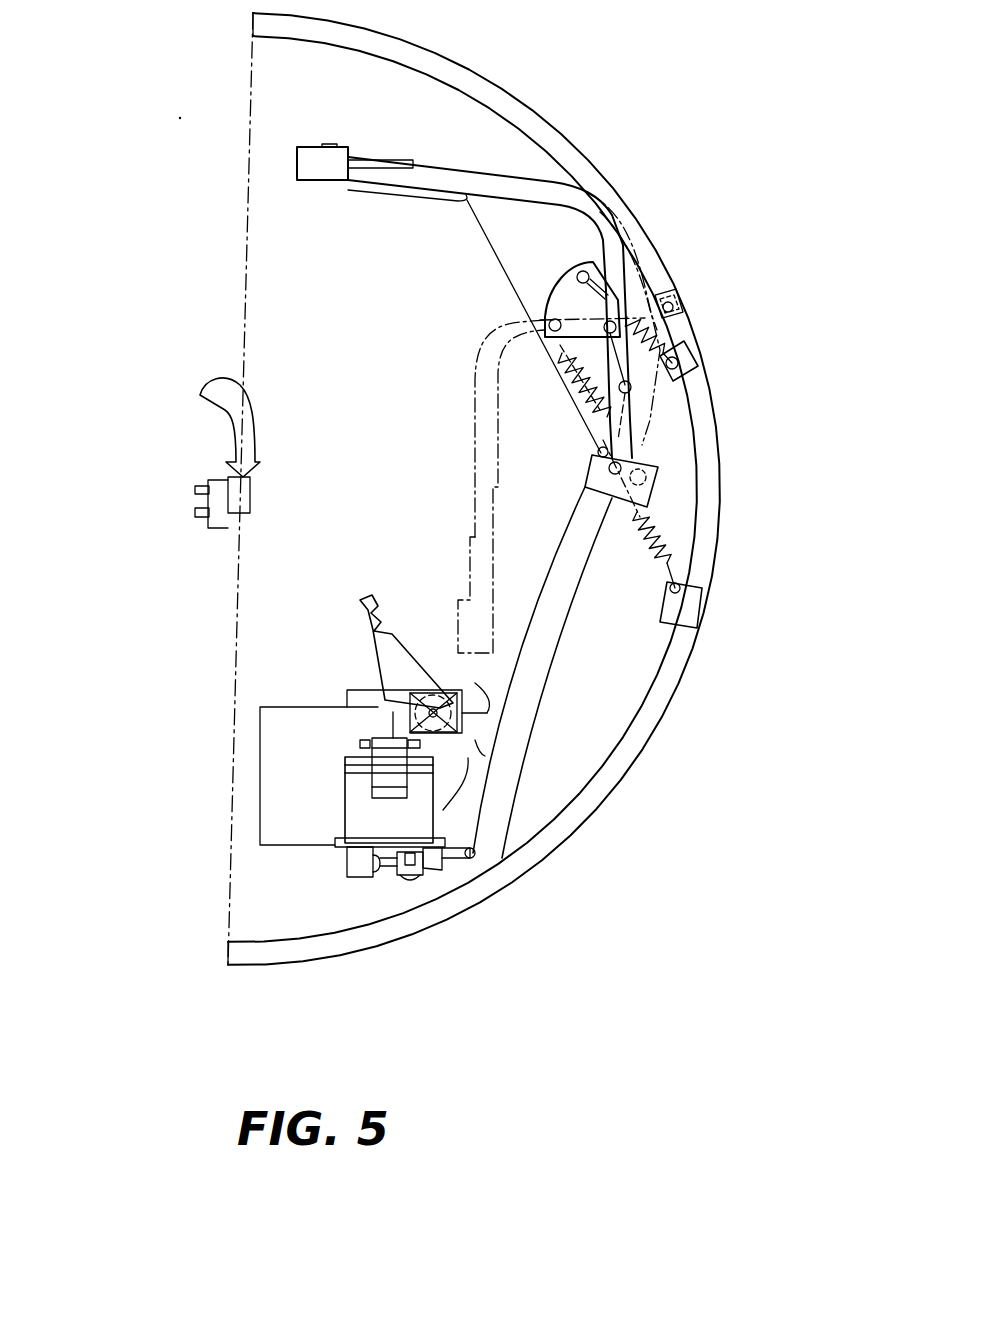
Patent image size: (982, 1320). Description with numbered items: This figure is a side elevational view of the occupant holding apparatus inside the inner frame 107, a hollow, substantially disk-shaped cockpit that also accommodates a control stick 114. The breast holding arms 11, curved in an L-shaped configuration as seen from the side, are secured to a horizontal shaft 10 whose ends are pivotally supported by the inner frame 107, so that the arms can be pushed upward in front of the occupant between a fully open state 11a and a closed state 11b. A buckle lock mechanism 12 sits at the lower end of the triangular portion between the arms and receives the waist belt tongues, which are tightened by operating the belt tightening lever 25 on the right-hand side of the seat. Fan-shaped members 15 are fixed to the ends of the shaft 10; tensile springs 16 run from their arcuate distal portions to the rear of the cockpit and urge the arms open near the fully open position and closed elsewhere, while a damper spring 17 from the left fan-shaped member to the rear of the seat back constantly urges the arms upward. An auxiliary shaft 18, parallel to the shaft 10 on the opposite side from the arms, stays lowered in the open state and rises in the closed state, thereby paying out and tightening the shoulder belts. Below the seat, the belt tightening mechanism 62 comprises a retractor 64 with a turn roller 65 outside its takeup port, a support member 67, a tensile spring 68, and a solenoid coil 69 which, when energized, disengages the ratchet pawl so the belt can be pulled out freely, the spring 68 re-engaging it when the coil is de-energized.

The shaft 10 is at (628, 318).
The breast holding arms 11 is at (440, 173).
The fully open state of the breast holding arms 11a is at (553, 182).
The closed state of the breast holding arms 11b is at (475, 482).
The buckle lock mechanism 12 is at (338, 181).
The fan-shaped members 15 is at (563, 296).
The tensile springs 16 is at (640, 318).
The damper spring 17 is at (657, 563).
The auxiliary shaft 18 is at (683, 306).
The belt tightening lever 25 is at (368, 597).
The belt tightening mechanism 62 is at (485, 757).
The retractor 64 is at (402, 876).
The turn roller 65 is at (474, 858).
The support member 67 is at (443, 860).
The tensile spring 68 is at (423, 870).
The solenoid coil 69 is at (347, 860).
The inner frame 107 is at (716, 500).
The control stick 114 is at (225, 410).